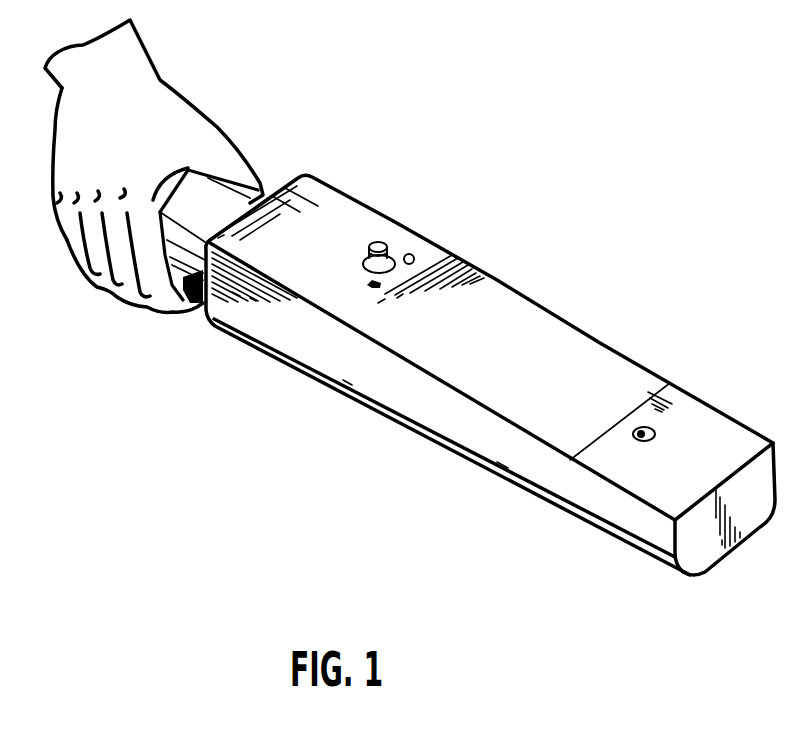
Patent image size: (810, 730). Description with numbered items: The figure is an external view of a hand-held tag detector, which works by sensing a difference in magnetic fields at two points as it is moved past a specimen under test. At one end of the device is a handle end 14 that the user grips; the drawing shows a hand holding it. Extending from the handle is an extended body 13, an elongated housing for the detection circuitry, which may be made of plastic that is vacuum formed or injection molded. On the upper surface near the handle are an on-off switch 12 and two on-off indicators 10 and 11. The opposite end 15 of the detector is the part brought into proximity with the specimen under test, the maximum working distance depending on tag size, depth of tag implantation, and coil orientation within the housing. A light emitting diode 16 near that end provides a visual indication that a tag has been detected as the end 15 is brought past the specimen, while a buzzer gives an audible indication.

The on-off indicator 10 is at (414, 255).
The on-off indicator 11 is at (370, 284).
The on-off switch 12 is at (386, 247).
The extended body 13 is at (583, 331).
The handle end 14 is at (247, 200).
The end 15 is at (697, 540).
The light emitting diode 16 is at (646, 427).